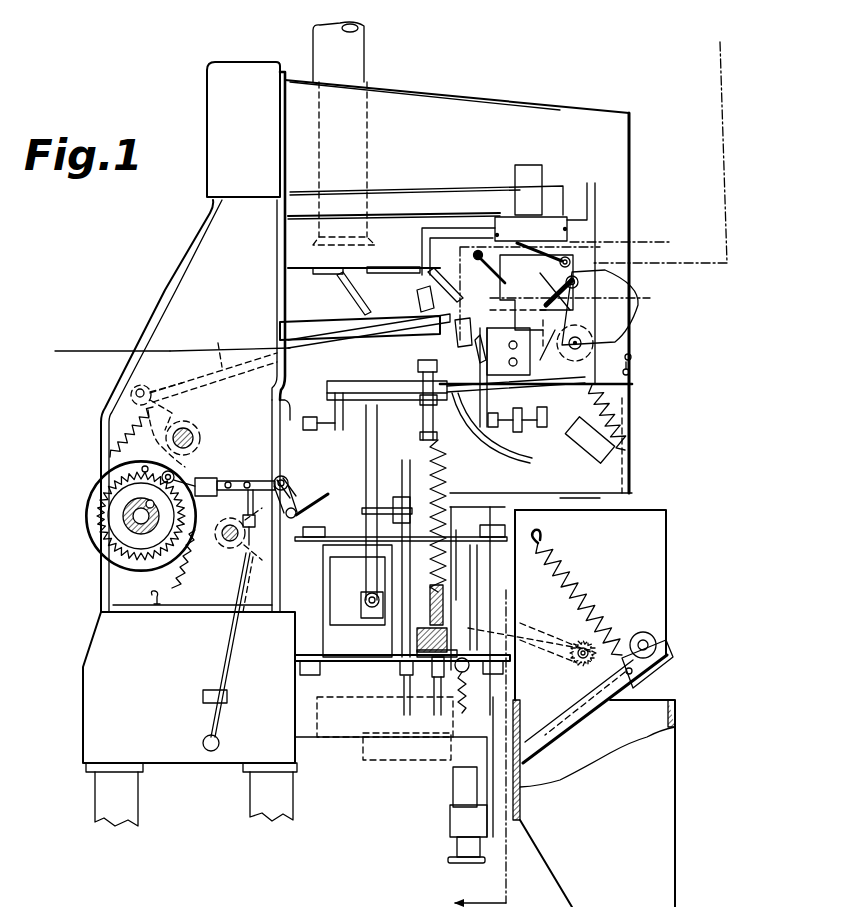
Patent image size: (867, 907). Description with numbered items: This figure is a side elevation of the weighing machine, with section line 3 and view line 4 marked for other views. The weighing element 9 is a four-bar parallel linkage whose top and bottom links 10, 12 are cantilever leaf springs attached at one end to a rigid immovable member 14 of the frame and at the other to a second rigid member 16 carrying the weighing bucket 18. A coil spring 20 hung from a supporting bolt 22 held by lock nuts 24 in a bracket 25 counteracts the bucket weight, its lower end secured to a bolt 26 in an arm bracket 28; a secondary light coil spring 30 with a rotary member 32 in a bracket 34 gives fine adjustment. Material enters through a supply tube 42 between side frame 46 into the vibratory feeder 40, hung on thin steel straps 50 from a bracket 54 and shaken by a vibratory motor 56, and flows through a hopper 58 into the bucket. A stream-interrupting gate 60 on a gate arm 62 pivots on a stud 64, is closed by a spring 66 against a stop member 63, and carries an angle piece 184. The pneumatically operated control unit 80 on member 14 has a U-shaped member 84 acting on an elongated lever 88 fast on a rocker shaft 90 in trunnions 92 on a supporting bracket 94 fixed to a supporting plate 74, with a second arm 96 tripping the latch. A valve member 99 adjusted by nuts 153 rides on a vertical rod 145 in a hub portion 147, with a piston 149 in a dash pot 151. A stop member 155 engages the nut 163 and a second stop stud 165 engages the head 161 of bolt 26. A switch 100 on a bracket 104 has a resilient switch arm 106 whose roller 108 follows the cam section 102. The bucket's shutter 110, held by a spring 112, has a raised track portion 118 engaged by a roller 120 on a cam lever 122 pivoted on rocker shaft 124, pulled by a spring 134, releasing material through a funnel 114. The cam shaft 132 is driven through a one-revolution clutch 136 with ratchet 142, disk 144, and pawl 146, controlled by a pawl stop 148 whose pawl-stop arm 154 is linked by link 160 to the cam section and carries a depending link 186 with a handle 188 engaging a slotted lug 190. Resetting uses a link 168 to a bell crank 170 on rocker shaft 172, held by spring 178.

The section line 3- 3 is at (663, 42).
The section line 4- 4 is at (74, 335).
The weighing element 9 is at (474, 522).
The top horizontal link 10 is at (346, 538).
The bottom horizontal link 12 is at (296, 702).
The rigid immovable member 14 is at (284, 590).
The second rigid member 16 is at (476, 560).
The weighing bucket 18 is at (669, 561).
The coil spring 20 is at (450, 479).
The supporting bolt 22 is at (418, 364).
The lock nuts 24 is at (446, 420).
The bracket 25 is at (284, 396).
The bolt 26 is at (463, 612).
The bracket 28 is at (475, 645).
The secondary light coil spring 30 is at (510, 690).
The rotary member 32 is at (453, 795).
The bracket 34 is at (342, 738).
The vibratory feeder 40 is at (412, 214).
The supply tube 42 is at (364, 62).
The side frame 46 is at (482, 104).
The thin steel straps 50 is at (348, 298).
The bracket 54 is at (290, 332).
The vibratory motor 56 is at (416, 294).
The hopper 58 is at (638, 327).
The stream-interrupting gate 60 is at (506, 452).
The gate arm 62 is at (455, 336).
The stop member 63 is at (584, 463).
The stud 64 is at (634, 358).
The spring 66 is at (608, 422).
The supporting plate 74 is at (640, 301).
The pneumatically operated control unit 80 is at (357, 601).
The U-shaped member 84 is at (361, 610).
The elongated lever 88 is at (366, 470).
The rocker shaft 90 is at (386, 428).
The trunnions 92 is at (309, 430).
The supporting bracket 94 is at (352, 381).
The second arm 96 is at (522, 404).
The valve member 99 is at (391, 507).
The switch 100 is at (531, 229).
The cam section 102 is at (640, 283).
The bracket 104 is at (527, 166).
The resilient switch arm 106 is at (562, 245).
The roller 108 is at (571, 265).
The shutter 110 is at (624, 722).
The spring 112 is at (572, 568).
The funnel 114 is at (667, 802).
The raised track portion 118 is at (573, 661).
The roller 120 is at (626, 622).
The cam lever 122 is at (247, 614).
The rocker shaft 124 is at (228, 546).
The cam shaft 132 is at (126, 526).
The spring 134 is at (162, 598).
The one-revolution clutch 136 is at (76, 479).
The ratchet 142 is at (100, 516).
The disk 144 is at (87, 501).
The vertical rod 145 is at (453, 550).
The pawl 146 is at (174, 474).
The hub portion 147 is at (378, 662).
The pawl stop 148 is at (184, 483).
The piston 149 is at (373, 740).
The dash pot 151 is at (386, 750).
The nuts 153 is at (413, 507).
The pawl-stop arm 154 is at (264, 481).
The stop member 155 is at (480, 634).
The link 160 is at (287, 482).
The head 161 is at (402, 678).
The nut 163 is at (416, 640).
The second stop stud 165 is at (439, 680).
The link 168 is at (220, 352).
The bell crank 170 is at (146, 386).
The rocker shaft 172 is at (186, 428).
The spring 178 is at (112, 421).
The angle piece 184 is at (360, 328).
The depending link 186 is at (224, 654).
The handle 188 is at (204, 741).
The slotted lug 190 is at (203, 696).